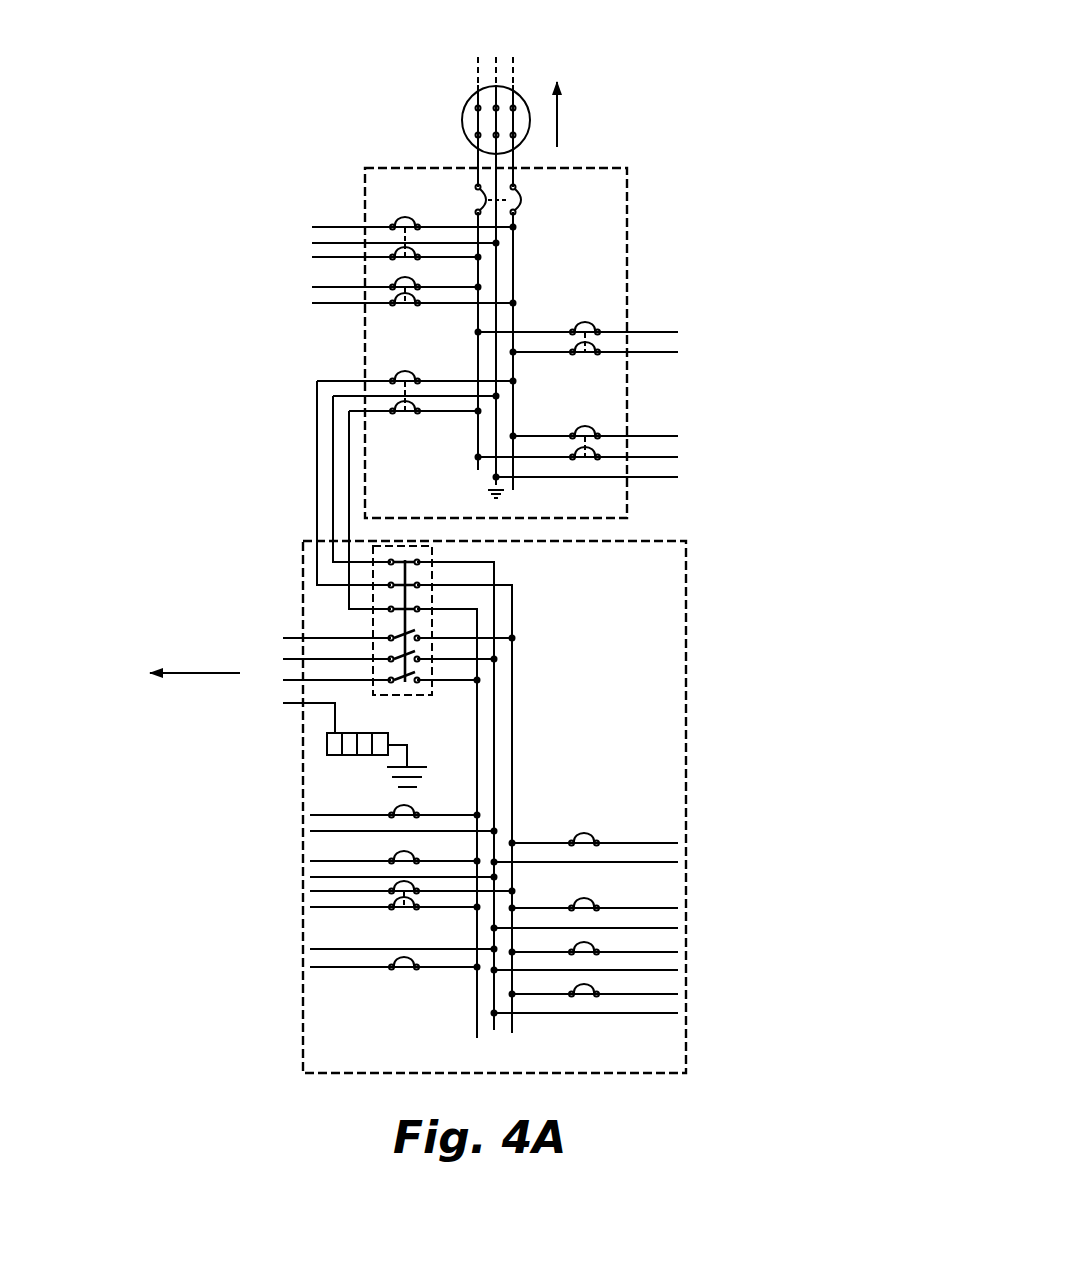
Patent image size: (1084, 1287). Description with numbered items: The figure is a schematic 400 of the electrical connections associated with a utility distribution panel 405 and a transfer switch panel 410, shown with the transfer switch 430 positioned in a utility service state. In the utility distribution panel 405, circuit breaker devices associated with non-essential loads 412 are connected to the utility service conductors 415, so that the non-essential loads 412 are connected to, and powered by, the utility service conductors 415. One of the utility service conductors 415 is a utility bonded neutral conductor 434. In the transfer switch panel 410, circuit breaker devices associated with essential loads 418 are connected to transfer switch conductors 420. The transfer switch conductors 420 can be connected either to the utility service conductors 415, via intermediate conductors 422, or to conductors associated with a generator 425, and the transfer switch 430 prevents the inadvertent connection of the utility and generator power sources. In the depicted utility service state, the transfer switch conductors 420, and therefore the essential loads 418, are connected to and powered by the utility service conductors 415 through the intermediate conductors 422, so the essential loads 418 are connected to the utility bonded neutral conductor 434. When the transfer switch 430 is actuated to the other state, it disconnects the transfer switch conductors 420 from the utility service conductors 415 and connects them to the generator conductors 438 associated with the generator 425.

The schematic 400 is at (498, 559).
The utility distribution panel 405 is at (503, 343).
The transfer switch panel 410 is at (498, 745).
The non-essential loads 412 is at (152, 294).
The utility service conductors 415 is at (516, 36).
The essential loads 418 is at (866, 848).
The transfer switch conductors 420 is at (462, 1040).
The intermediate conductors 422 is at (290, 458).
The generator 425 is at (353, 649).
The transfer switch 430 is at (425, 697).
The utility bonded neutral conductor 434 is at (500, 289).
The generator conductors 438 is at (266, 664).